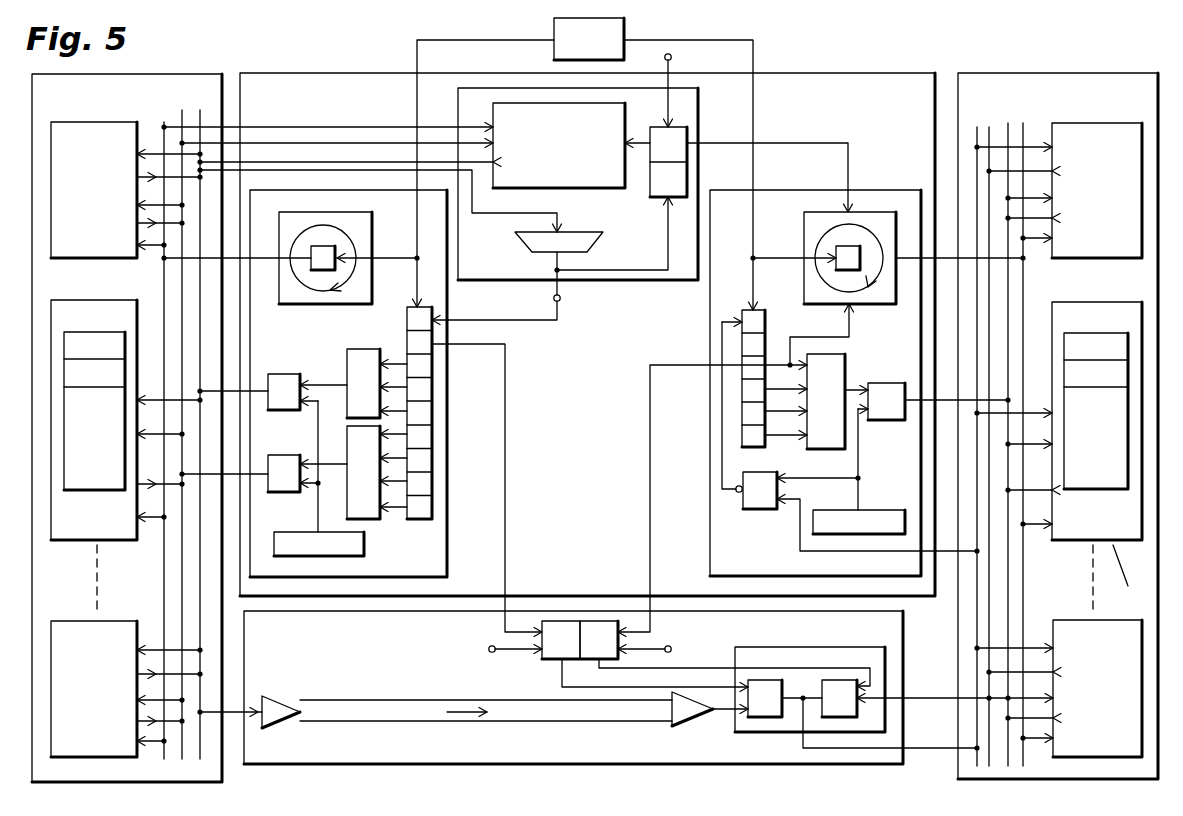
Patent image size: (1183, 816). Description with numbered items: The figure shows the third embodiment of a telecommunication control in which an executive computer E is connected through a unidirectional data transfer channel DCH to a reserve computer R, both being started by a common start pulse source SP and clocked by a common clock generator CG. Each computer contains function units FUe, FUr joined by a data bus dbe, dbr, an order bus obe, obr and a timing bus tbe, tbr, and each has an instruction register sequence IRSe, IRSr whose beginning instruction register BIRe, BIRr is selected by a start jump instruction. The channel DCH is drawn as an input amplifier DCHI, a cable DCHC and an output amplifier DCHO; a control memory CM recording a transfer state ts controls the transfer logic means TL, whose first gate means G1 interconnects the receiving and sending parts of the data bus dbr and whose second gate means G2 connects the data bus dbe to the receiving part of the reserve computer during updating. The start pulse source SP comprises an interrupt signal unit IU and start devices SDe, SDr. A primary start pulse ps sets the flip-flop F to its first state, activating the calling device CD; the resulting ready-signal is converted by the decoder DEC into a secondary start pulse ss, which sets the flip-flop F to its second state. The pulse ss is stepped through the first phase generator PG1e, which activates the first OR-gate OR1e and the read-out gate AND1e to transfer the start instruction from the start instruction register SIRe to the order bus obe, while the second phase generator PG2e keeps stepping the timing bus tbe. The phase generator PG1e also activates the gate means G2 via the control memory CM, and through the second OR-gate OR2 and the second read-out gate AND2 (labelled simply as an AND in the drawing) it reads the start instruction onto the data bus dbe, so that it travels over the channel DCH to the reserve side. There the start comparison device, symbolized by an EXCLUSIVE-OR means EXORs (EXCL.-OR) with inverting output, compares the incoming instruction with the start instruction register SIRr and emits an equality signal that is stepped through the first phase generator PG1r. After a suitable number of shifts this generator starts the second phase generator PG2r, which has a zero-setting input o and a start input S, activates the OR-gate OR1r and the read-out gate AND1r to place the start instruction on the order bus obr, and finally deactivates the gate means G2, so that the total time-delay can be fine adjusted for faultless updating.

The executive computer E is at (173, 74).
The reserve computer R is at (1051, 73).
The start pulse source SP is at (859, 73).
The clock generator CG is at (554, 31).
The primary start pulse ps is at (671, 57).
The calling device CD is at (596, 188).
The flip-flop F is at (652, 198).
The decoder DEC is at (598, 242).
The interrupt signal unit IU is at (500, 282).
The secondary start pulse ss is at (560, 298).
The second phase generator of the executive computer PG2e is at (337, 273).
The first phase generator of the executive computer PG1e is at (407, 340).
The second OR-gate OR2 is at (347, 352).
The second read-out gate means AND2 is at (285, 368).
The AND gate AND is at (274, 416).
The first read-out gate means AND1e is at (285, 492).
The first OR-gate of the executive computer OR1e is at (382, 523).
The start instruction register of the executive computer SIRe is at (366, 556).
The start device of the executive computer SDe is at (447, 558).
The function units of the executive computer FUe is at (110, 292).
The beginning instruction register of the executive computer BIRe is at (94, 373).
The instruction register sequence of the executive computer IRSe is at (92, 492).
The timing bus of the executive computer tbe is at (163, 120).
The order bus of the executive computer obe is at (182, 110).
The data bus of the executive computer dbe is at (207, 101).
The second phase generator of the reserve computer PG2r is at (804, 236).
The zero-setting input o is at (850, 206).
The start input S is at (850, 322).
The first phase generator of the reserve computer PG1r is at (762, 448).
The first OR-gate of the reserve computer OR1r is at (846, 360).
The first read-out gate means of the reserve computer AND1r is at (933, 390).
The EXCLUSIVE-OR means EXORs is at (760, 516).
The EXCLUSIVE-OR means EXCL.-OR is at (781, 505).
The start instruction register of the reserve computer SIRr is at (882, 504).
The start device of the reserve computer SDr is at (710, 522).
The function units of the reserve computer FUr is at (1093, 264).
The beginning instruction register of the reserve computer BIRr is at (1096, 373).
The instruction register sequence of the reserve computer IRSr is at (1099, 491).
The data bus of the reserve computer dbr is at (992, 122).
The order bus of the reserve computer obr is at (1008, 126).
The timing bus of the reserve computer tbr is at (1024, 128).
The transfer state ts is at (580, 640).
The control memory CM is at (546, 661).
The input amplifier of the data transfer channel DCHI is at (282, 693).
The cable of the data transfer channel DCHC is at (393, 705).
The output amplifier of the data transfer channel DCHO is at (680, 730).
The transfer logic means TL is at (736, 733).
The first gate means G1 is at (843, 680).
The second gate means G2 is at (766, 680).
The data transfer channel DCH is at (892, 766).